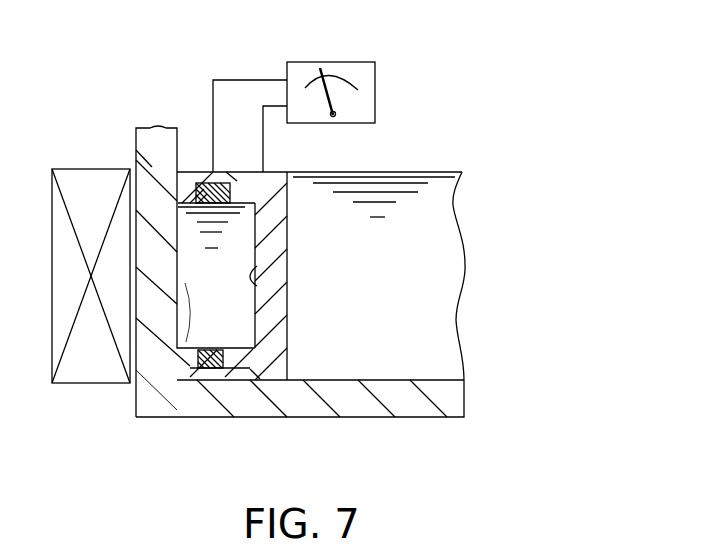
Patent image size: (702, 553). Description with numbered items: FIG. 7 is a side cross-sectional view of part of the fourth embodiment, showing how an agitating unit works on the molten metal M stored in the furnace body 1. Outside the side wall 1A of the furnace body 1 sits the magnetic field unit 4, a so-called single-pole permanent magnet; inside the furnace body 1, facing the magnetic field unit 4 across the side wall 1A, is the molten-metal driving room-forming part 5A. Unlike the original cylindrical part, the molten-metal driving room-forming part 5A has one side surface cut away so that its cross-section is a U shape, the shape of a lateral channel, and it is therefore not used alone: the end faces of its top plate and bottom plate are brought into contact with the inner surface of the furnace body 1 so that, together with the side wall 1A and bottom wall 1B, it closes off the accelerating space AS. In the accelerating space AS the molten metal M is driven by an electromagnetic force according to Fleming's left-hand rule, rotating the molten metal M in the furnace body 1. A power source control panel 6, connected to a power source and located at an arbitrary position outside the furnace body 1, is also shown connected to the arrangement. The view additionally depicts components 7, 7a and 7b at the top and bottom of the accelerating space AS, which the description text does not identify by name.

The furnace body 1 is at (160, 128).
The side wall 1A is at (136, 147).
The bottom wall 1B is at (368, 405).
The magnetic field unit 4 is at (88, 169).
The molten-metal driving room-forming part 5A is at (288, 226).
The power source control panel 6 is at (333, 62).
The electrode pair 7 is at (178, 346).
The upper electrode 7a is at (233, 194).
The lower electrode 7b is at (232, 360).
The accelerating space AS is at (258, 286).
The molten metal M is at (430, 278).